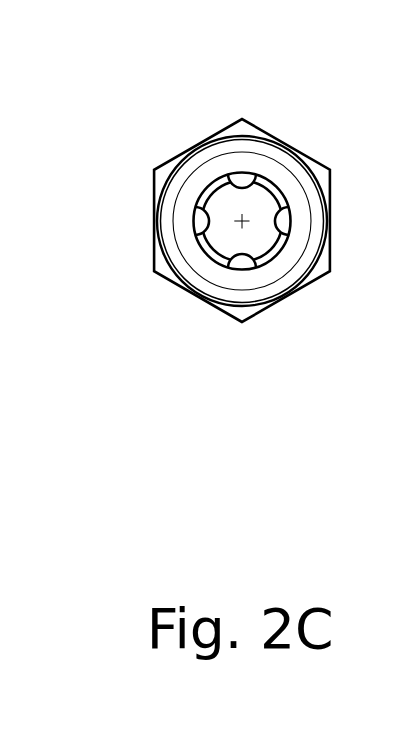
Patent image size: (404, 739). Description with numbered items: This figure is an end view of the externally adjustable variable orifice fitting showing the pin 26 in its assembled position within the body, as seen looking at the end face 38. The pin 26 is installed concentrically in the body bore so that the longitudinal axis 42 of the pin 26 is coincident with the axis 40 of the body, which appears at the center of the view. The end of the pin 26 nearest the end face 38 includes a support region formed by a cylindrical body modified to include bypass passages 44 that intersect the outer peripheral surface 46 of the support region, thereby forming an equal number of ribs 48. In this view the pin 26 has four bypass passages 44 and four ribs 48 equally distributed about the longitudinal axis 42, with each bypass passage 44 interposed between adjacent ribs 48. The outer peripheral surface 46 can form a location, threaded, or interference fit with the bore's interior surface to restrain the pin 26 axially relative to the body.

The pin 26 is at (253, 198).
The end face 38 is at (205, 169).
The axis of body 40 is at (289, 295).
The longitudinal axis of pin 42 is at (244, 224).
The bypass passages 44 is at (240, 180).
The outer peripheral surface 46 is at (192, 192).
The ribs 48 is at (275, 248).